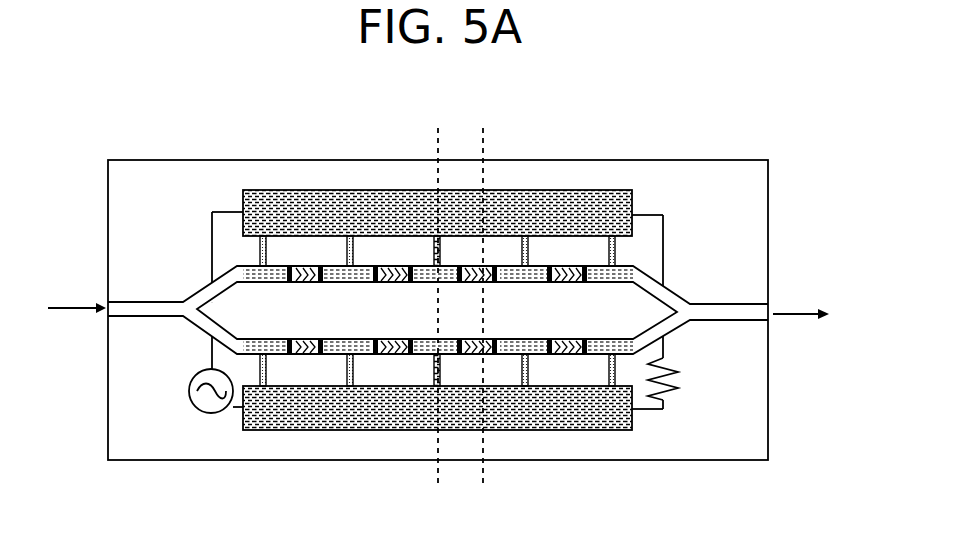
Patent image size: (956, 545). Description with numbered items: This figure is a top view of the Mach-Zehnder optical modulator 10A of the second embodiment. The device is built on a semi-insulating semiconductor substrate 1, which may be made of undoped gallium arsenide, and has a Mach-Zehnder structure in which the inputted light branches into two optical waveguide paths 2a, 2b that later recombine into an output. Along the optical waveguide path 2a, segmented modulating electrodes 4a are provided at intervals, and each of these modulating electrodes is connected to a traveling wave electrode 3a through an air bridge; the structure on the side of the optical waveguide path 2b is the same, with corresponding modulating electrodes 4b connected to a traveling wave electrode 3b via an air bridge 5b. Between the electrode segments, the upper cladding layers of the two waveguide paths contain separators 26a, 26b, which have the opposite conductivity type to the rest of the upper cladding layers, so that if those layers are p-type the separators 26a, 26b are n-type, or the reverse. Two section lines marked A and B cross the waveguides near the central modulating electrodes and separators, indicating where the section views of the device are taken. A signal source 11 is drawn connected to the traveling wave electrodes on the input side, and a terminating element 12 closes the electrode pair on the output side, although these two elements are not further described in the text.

The optical modulator 10A is at (232, 143).
The semi-insulating semiconductor substrate 1 is at (690, 448).
The optical waveguide path 2a is at (390, 201).
The optical waveguide path 2b is at (390, 420).
The traveling wave electrode 3a is at (572, 202).
The traveling wave electrode 3b is at (572, 423).
The modulating electrode 4a is at (428, 272).
The modulating electrode 4b is at (437, 356).
The air bridge 5b is at (435, 265).
The separator 26a is at (487, 267).
The separator 26b is at (488, 355).
The signal source 11 is at (190, 403).
The terminating resistor 12 is at (679, 388).